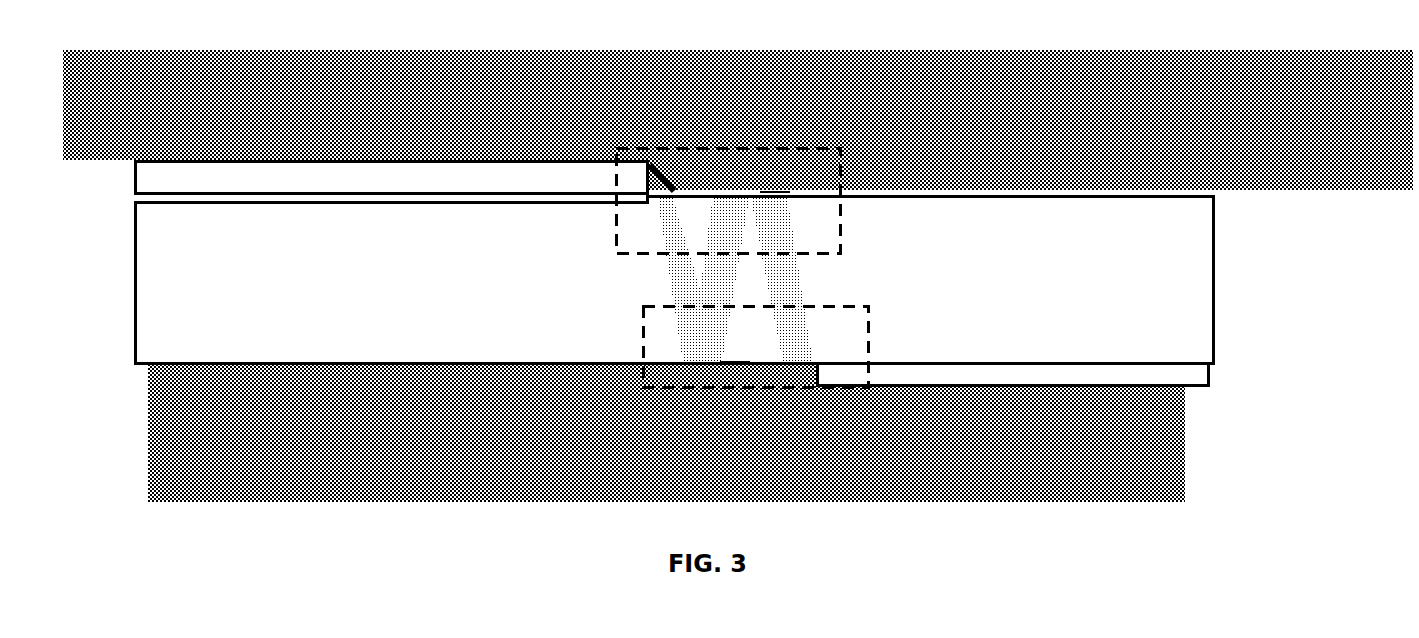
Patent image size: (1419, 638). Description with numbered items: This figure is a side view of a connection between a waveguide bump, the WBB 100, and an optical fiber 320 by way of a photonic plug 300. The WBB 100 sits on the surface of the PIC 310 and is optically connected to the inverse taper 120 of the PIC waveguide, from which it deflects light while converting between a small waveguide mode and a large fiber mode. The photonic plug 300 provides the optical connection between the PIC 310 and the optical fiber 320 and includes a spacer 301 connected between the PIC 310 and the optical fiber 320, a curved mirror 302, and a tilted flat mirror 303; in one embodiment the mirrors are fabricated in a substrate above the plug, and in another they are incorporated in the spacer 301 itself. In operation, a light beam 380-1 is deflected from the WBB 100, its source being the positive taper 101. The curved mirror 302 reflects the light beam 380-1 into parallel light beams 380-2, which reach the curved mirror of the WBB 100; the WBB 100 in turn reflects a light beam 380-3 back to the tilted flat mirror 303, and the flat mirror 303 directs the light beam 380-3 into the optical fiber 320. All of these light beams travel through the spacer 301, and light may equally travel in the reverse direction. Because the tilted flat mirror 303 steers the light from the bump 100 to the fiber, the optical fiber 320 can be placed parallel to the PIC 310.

The WBB 100 is at (870, 338).
The positive taper 101 is at (733, 358).
The inverse taper 120 is at (1102, 387).
The photonic plug 300 is at (841, 165).
The spacer 301 is at (365, 334).
The curved mirror 302 is at (772, 187).
The tilted flat mirror 303 is at (663, 168).
The PIC 310 is at (677, 479).
The optical fiber 320 is at (307, 118).
The light beam 380-1 is at (815, 229).
The parallel light beams 380-2 is at (716, 248).
The light beam 380-3 is at (668, 261).